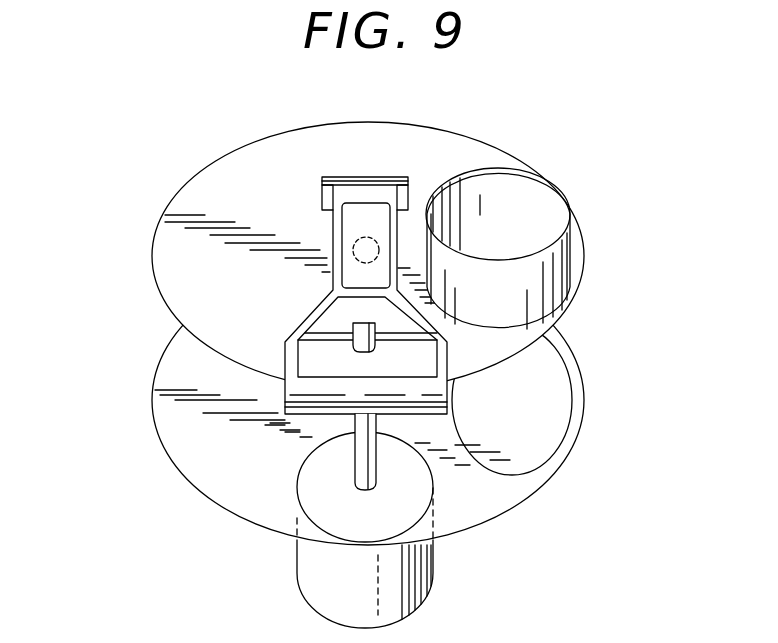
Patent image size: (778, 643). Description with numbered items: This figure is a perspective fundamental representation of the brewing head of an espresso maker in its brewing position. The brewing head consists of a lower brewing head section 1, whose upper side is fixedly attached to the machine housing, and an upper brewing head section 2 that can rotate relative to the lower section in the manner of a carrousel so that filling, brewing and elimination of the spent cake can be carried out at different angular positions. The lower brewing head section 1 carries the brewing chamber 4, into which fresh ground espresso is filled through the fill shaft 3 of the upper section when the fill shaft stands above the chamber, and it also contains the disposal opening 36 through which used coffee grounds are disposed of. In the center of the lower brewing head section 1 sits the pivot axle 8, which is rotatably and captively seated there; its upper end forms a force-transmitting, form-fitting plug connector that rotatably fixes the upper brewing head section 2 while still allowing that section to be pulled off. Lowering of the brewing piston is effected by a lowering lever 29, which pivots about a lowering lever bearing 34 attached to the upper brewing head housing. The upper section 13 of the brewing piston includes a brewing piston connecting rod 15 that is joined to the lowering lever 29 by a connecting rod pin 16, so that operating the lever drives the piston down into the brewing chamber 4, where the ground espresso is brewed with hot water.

The lower brewing head section 1 is at (195, 423).
The upper brewing head section 2 is at (458, 153).
The fill shaft 3 is at (527, 215).
The brewing chamber 4 is at (407, 568).
The pivot axle 8 is at (366, 253).
The upper section 13 is at (338, 497).
The brewing piston connecting rod 15 is at (360, 343).
The connecting rod pin 16 is at (332, 335).
The lowering lever 29 is at (322, 313).
The lowering lever bearing 34 is at (328, 190).
The disposal opening 36 is at (538, 378).